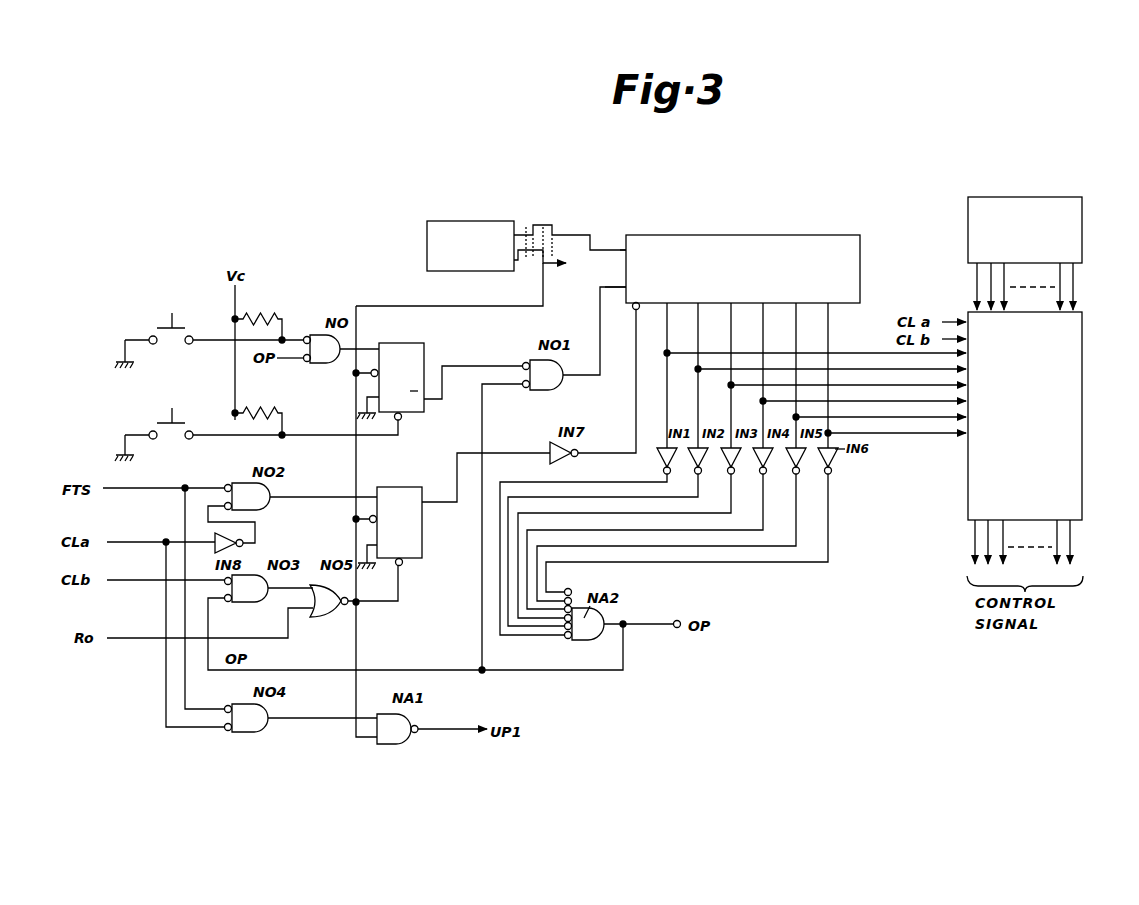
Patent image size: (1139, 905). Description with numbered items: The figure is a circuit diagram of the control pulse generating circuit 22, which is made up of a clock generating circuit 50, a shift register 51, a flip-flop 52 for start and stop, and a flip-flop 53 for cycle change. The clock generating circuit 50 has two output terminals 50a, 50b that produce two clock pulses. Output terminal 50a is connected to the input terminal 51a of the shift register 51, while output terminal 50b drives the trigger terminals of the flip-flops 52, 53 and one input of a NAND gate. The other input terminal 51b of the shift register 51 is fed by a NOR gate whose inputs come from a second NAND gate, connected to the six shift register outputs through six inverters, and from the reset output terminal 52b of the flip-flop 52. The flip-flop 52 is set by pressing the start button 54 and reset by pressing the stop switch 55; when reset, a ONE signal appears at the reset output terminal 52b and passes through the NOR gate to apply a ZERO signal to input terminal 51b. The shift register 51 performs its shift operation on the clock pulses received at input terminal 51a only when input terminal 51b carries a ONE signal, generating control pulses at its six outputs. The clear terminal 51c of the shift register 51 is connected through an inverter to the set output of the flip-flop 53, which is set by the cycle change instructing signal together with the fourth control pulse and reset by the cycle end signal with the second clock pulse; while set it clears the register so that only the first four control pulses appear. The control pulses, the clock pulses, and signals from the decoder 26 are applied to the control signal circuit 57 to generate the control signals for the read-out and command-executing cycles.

The control pulse generating circuit 22 is at (669, 181).
The decoder 26 is at (1032, 197).
The clock generating circuit 50 is at (486, 223).
The output terminal 50a is at (519, 228).
The output terminal 50b is at (517, 266).
The shift register 51 is at (753, 235).
The input terminal 51a is at (626, 247).
The input terminal 51b is at (610, 305).
The clear terminal 51c is at (639, 308).
The flip-flop for start and stop 52 is at (405, 347).
The reset output terminal 52b is at (428, 400).
The flip-flop for cycle change 53 is at (404, 486).
The start button 54 is at (186, 325).
The stop switch 55 is at (184, 423).
The control signal circuit 57 is at (1070, 348).